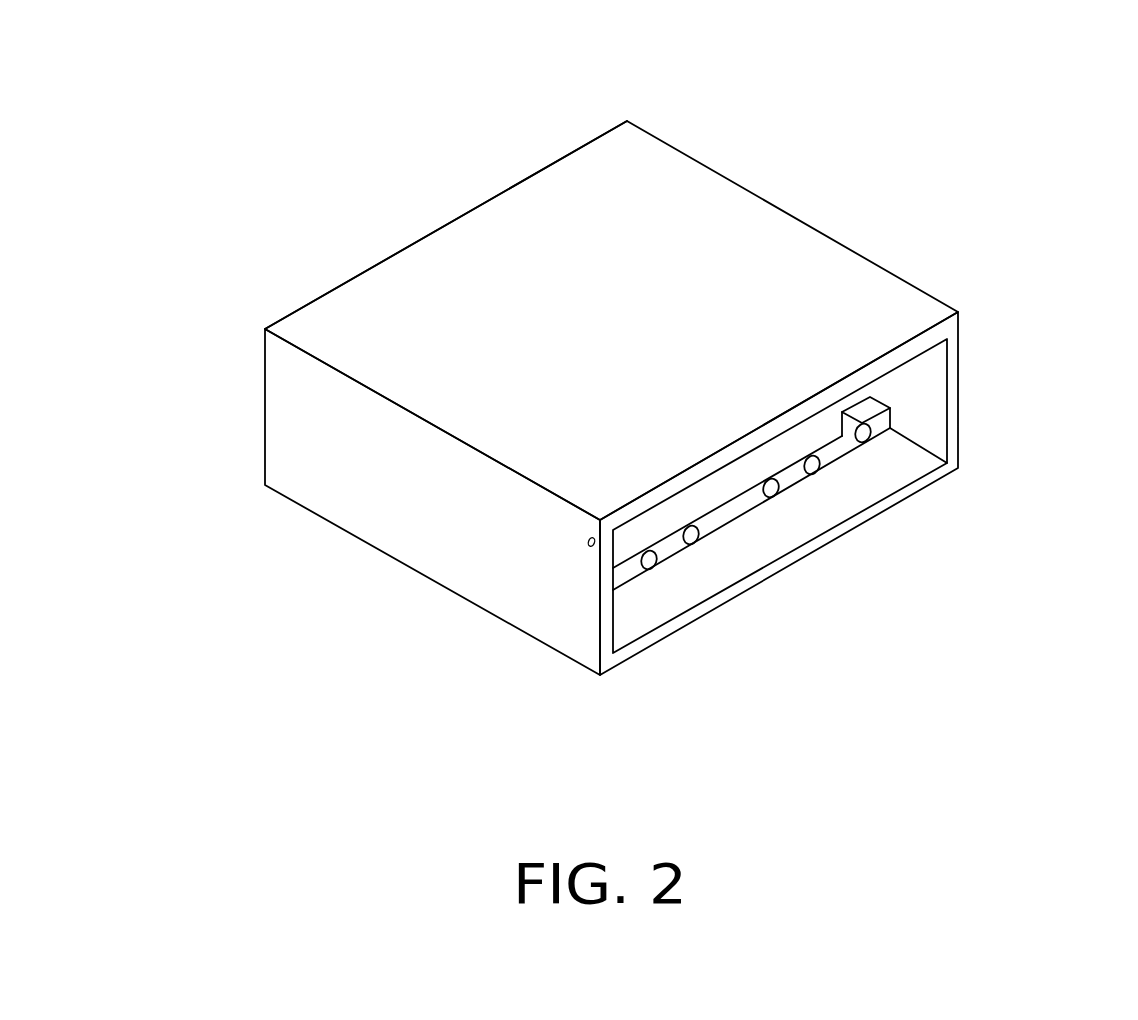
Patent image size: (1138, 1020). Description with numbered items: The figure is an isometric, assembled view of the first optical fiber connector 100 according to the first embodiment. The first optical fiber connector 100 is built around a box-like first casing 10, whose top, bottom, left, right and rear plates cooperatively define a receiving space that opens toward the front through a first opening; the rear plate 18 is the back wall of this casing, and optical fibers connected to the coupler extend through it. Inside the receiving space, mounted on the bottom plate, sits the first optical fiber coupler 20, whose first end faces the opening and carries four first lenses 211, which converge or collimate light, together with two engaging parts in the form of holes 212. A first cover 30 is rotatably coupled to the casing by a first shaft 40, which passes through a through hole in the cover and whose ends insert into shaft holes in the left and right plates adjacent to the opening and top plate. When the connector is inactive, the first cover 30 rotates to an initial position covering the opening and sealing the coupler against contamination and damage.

The first optical fiber connector 100 is at (306, 100).
The first casing 10 is at (745, 223).
The rear plate 18 is at (417, 239).
The first optical fiber coupler 20 is at (727, 512).
The first lenses 211 is at (812, 468).
The holes 212 is at (867, 440).
The first cover 30 is at (915, 362).
The first shaft 40 is at (588, 547).